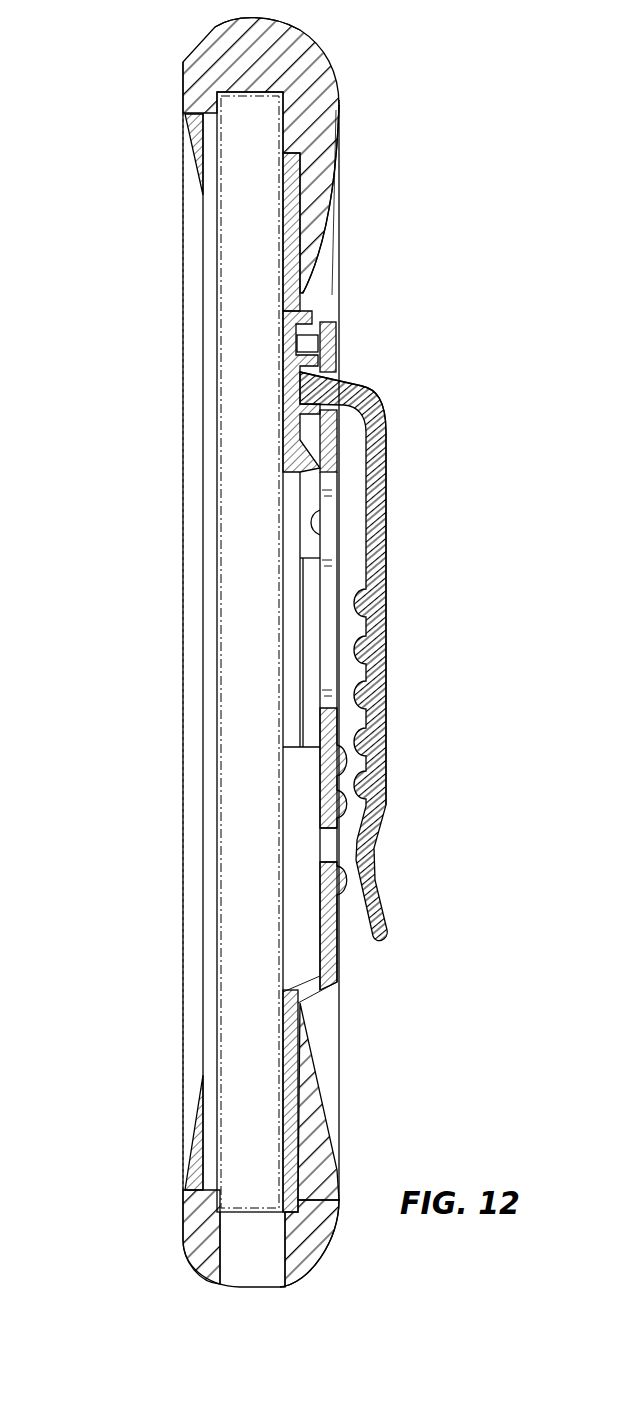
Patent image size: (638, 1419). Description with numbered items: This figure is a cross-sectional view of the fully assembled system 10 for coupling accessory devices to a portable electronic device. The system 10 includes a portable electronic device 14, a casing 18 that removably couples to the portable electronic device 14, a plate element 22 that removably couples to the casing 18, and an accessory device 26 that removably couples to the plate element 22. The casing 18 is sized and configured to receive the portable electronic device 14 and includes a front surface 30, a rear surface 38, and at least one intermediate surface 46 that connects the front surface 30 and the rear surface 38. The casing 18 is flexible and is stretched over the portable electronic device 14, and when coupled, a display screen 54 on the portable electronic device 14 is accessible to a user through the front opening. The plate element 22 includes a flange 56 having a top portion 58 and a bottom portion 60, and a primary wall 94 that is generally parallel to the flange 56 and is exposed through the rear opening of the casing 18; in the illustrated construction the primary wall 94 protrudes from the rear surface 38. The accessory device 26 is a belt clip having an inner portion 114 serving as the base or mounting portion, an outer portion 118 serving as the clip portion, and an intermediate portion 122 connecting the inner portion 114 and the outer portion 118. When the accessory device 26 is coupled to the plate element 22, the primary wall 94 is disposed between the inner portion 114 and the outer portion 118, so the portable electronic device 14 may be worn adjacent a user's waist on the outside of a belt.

The system 10 is at (100, 78).
The portable electronic device 14 is at (243, 273).
The casing 18 is at (332, 62).
The plate element 22 is at (340, 340).
The accessory device 26 is at (392, 470).
The front surface 30 is at (185, 150).
The rear surface 38 is at (340, 150).
The intermediate surface 46 is at (245, 20).
The display screen 54 is at (195, 546).
The flange 56 is at (307, 236).
The top portion 58 is at (298, 196).
The bottom portion 60 is at (297, 1112).
The primary wall 94 is at (333, 450).
The inner portion 114 is at (290, 440).
The outer portion 118 is at (388, 527).
The intermediate portion 122 is at (340, 388).